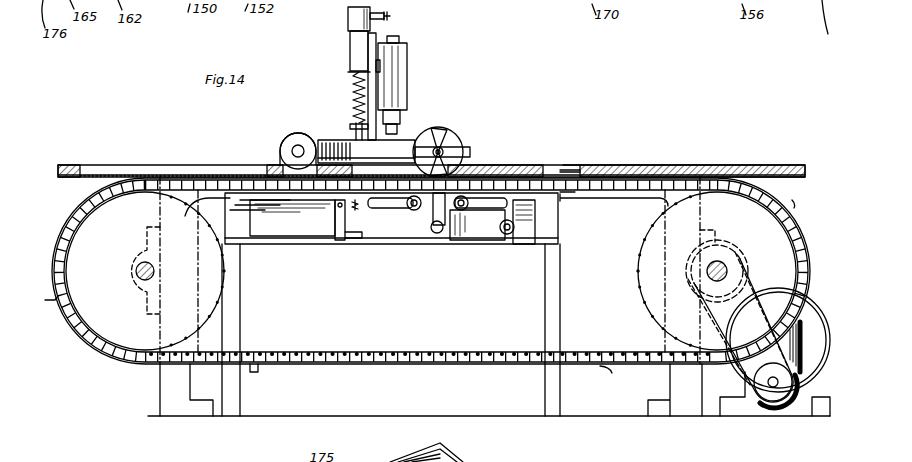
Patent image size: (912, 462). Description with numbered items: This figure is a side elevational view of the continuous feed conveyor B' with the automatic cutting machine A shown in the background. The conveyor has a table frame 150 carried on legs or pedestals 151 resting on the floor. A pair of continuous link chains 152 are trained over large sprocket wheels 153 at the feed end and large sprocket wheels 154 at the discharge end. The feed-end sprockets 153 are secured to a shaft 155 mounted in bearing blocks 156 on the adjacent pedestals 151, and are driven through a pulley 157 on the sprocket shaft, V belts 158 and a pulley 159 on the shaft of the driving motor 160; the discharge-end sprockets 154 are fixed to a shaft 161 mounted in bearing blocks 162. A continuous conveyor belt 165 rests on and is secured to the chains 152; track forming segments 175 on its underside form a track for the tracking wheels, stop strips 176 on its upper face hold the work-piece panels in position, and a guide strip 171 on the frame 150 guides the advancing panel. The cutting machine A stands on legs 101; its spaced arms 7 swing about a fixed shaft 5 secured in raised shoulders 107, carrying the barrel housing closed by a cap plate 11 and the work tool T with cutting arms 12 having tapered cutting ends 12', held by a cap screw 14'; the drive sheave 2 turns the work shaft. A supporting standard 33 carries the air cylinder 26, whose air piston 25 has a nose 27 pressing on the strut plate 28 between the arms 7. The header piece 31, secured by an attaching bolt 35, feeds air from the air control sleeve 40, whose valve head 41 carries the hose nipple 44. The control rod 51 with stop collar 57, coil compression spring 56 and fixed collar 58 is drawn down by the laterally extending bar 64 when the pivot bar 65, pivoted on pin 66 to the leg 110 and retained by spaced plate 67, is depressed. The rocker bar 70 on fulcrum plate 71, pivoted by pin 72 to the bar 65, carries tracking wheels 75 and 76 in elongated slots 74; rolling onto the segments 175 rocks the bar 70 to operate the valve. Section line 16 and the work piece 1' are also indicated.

The drive pulley or sheave 2 is at (90, 170).
The work pieces 1' is at (425, 153).
The continuous spaced link chains 152 is at (383, 351).
The large sprocket wheels 154 is at (102, 325).
The shaft 161 is at (132, 271).
The bearing blocks 162 is at (140, 246).
The large sprocket wheels 153 is at (782, 240).
The shaft 155 is at (720, 262).
The bearing blocks 156 is at (712, 228).
The pulley 157 is at (740, 266).
The V belts 158 is at (747, 389).
The pulley 159 is at (770, 398).
The driving motor 160 is at (796, 388).
The legs or pedestals 151 is at (160, 390).
The legs 101 is at (240, 319).
The continuous conveyor belt 165 is at (335, 365).
The continuous feed conveyor B' is at (396, 401).
The table frame 150 is at (580, 199).
The track forming segments 175 is at (626, 201).
The stop strips 176 is at (563, 165).
The guide strip 171 is at (578, 171).
The section line 16 is at (567, 113).
The downwardly projecting leg 110 is at (305, 238).
The spaced plate 67 is at (335, 210).
The laterally extending bar 64 is at (355, 240).
The elongated slot 74 is at (386, 208).
The tracking wheel 76 is at (402, 226).
The fulcrum plate 71 is at (428, 212).
The pivot pin 72 is at (440, 236).
The tracking wheel 75 is at (462, 220).
The pivot bar 65 is at (483, 228).
The pivot pin 66 is at (512, 236).
The rocker bar 70 is at (525, 222).
The strut plate 28 is at (366, 151).
The spaced arms 7 is at (341, 151).
The raised shoulders 107 is at (288, 134).
The fixed shaft 5 is at (280, 151).
The supporting standard 33 is at (377, 38).
The valve head 41 is at (349, 16).
The air hose attaching nipple 44 is at (390, 15).
The air control sleeve 40 is at (351, 47).
The stop collar 57 is at (353, 72).
The coil compression spring 56 is at (356, 84).
The fixed collar 58 is at (354, 128).
The control rod 51 is at (350, 131).
The attaching bolt 35 is at (400, 38).
The header piece 31 is at (408, 51).
The automatic cutting machine A is at (425, 71).
The air cylinder 26 is at (397, 80).
The air piston 25 is at (398, 120).
The nose 27 is at (399, 127).
The cap plate 11 is at (463, 140).
The tapered cutting ends 12' is at (444, 118).
The cap screw 14' is at (461, 127).
The tool T is at (456, 145).
The cutting arms 12 is at (456, 149).